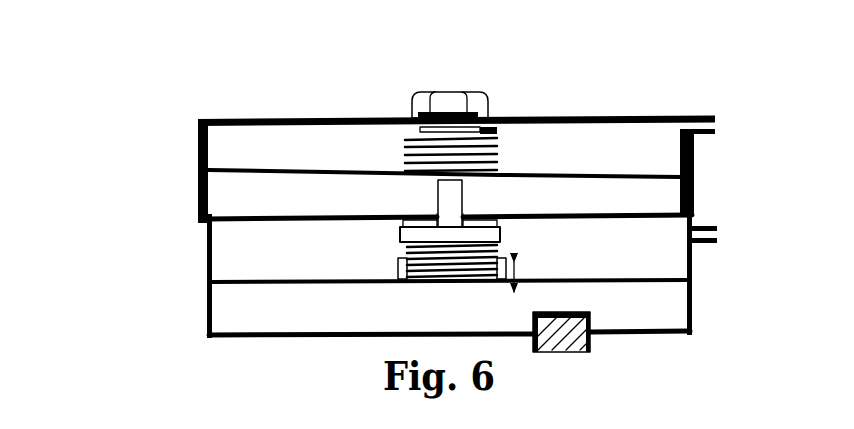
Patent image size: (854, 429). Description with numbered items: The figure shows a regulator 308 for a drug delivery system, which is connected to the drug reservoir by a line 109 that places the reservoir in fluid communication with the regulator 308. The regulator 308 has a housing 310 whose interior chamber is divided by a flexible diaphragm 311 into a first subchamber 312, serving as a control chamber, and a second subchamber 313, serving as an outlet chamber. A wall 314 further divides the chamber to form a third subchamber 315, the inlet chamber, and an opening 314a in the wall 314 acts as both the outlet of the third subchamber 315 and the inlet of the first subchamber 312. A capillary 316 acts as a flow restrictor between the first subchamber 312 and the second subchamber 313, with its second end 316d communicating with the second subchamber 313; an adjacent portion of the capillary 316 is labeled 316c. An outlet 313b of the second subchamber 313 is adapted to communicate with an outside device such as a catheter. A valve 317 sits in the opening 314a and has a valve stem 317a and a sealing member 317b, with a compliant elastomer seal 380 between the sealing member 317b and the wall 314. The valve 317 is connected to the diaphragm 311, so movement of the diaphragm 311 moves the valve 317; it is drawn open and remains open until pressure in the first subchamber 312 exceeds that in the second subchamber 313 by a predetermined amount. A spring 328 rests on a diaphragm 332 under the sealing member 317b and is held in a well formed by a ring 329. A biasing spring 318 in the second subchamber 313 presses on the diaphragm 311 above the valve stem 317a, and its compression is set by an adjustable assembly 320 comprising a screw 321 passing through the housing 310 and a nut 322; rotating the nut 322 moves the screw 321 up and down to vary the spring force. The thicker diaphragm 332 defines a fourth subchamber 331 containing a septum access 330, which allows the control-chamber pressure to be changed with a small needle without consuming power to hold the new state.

The regulator 308 is at (231, 90).
The capillary 316 is at (200, 163).
The flexible diaphragm 311 is at (345, 168).
The second subchamber 313 is at (646, 125).
The outlet 313b is at (670, 128).
The second end 316d is at (678, 137).
The intermediate shelf 316c is at (212, 214).
The first subchamber 312 is at (612, 195).
The wall 314 is at (557, 195).
The opening 314a is at (464, 203).
The third subchamber 315 is at (228, 253).
The line 109 is at (703, 228).
The housing 310 is at (210, 310).
The fourth subchamber 331 is at (666, 304).
The diaphragm 332 is at (261, 285).
The septum access 330 is at (592, 340).
The screw 321 is at (442, 91).
The nut 322 is at (416, 96).
The adjustable assembly 320 is at (489, 118).
The biasing spring 318 is at (403, 150).
The valve 317 is at (502, 237).
The valve stem 317a is at (436, 195).
The sealing member 317b is at (401, 232).
The seal 380 is at (400, 222).
The spring 328 is at (500, 248).
The ring 329 is at (398, 272).